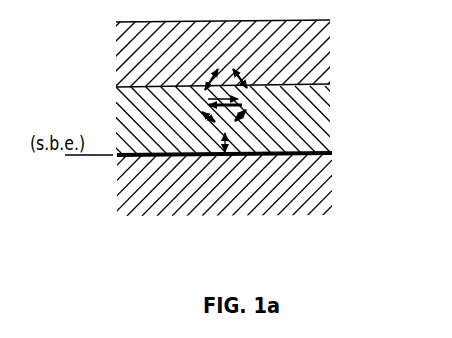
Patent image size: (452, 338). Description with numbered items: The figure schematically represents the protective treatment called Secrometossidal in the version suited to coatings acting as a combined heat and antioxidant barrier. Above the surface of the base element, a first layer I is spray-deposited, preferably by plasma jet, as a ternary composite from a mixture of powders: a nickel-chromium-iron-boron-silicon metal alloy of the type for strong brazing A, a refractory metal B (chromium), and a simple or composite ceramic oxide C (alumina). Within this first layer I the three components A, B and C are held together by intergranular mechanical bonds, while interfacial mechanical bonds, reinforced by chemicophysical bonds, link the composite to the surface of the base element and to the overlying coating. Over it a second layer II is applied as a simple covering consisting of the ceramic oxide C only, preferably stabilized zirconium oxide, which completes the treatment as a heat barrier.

The metal alloy of the type for strong brazing A is at (225, 131).
The refractory metal B is at (201, 105).
The simple or composite ceramic oxide C is at (232, 83).
The first layer I is at (348, 87).
The second layer II is at (348, 18).